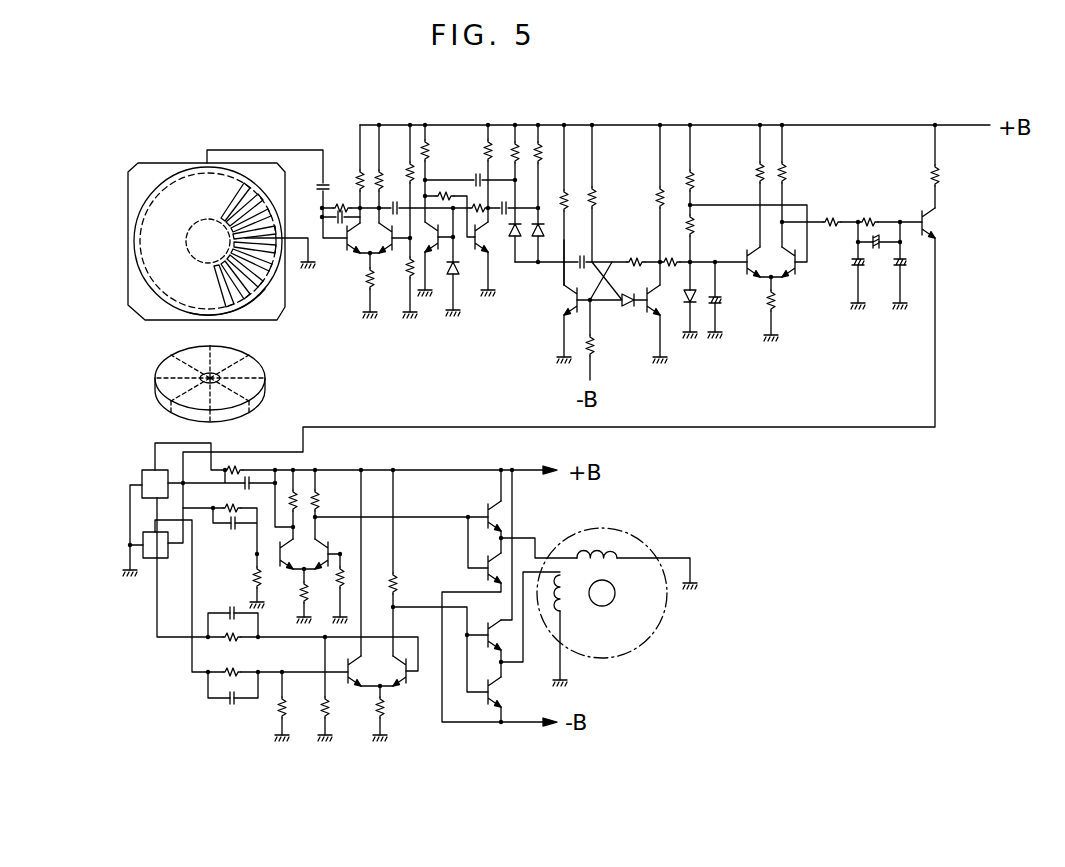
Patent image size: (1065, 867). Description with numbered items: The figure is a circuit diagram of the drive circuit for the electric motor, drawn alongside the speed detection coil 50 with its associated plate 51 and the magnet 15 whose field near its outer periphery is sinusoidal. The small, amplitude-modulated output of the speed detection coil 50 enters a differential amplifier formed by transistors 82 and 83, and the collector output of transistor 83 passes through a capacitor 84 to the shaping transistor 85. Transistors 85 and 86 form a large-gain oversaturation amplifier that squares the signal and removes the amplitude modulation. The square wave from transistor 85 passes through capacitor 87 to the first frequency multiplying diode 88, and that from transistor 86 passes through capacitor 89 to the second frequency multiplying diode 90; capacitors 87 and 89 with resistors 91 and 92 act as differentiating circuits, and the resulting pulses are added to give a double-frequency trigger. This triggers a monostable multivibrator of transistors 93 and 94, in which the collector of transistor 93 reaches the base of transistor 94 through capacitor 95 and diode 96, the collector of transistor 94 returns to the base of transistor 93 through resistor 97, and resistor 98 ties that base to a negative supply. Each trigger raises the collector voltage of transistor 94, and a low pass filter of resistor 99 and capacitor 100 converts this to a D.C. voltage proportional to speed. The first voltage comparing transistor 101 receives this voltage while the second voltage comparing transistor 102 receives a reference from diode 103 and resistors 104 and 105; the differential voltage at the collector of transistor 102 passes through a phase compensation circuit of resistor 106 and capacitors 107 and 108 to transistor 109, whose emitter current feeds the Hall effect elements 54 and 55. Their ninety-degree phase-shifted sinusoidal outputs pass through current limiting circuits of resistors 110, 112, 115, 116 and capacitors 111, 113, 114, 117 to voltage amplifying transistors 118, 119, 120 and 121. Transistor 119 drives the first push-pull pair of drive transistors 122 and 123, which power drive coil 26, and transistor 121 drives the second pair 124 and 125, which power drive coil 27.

The magnet 15 is at (265, 372).
The drive coil 26 is at (615, 555).
The drive coil 27 is at (566, 612).
The speed detection coil 50 is at (251, 201).
The detector plate 51 is at (268, 291).
The Hall effect element 54 is at (142, 472).
The Hall effect element 55 is at (147, 560).
The transistor 82 is at (352, 253).
The transistor 83 is at (390, 252).
The capacitor 84 is at (395, 201).
The shaping transistor 85 is at (428, 282).
The transistor 86 is at (486, 265).
The capacitor 87 is at (477, 176).
The first frequency multiplying diode 88 is at (540, 240).
The capacitor 89 is at (514, 240).
The second frequency multiplying diode 90 is at (560, 285).
The resistor 91 is at (513, 150).
The resistor 92 is at (537, 150).
The transistor 93 is at (579, 318).
The transistor 94 is at (625, 304).
The capacitor 95 is at (580, 257).
The diode 96 is at (595, 338).
The resistor 97 is at (636, 258).
The resistor 98 is at (594, 372).
The resistor 99 is at (672, 258).
The capacitor 100 is at (721, 303).
The first voltage comparing transistor 101 is at (748, 274).
The second voltage comparing transistor 102 is at (797, 276).
The diode 103 is at (687, 320).
The resistor 104 is at (697, 183).
The resistor 105 is at (697, 226).
The resistor 106 is at (870, 217).
The capacitor 107 is at (877, 249).
The capacitor 108 is at (906, 266).
The transistor 109 is at (940, 226).
The resistor 110 is at (252, 473).
The capacitor 111 is at (244, 489).
The resistor 112 is at (223, 512).
The capacitor 113 is at (235, 530).
The capacitor 114 is at (231, 606).
The resistor 115 is at (225, 641).
The resistor 116 is at (240, 668).
The capacitor 117 is at (229, 703).
The voltage amplifying transistor 118 is at (290, 571).
The voltage amplifying transistor 119 is at (318, 572).
The voltage amplifying transistor 120 is at (356, 688).
The voltage amplifying transistor 121 is at (397, 688).
The drive transistor 122 is at (486, 507).
The drive transistor 123 is at (486, 576).
The drive transistor 124 is at (486, 629).
The drive transistor 125 is at (487, 706).